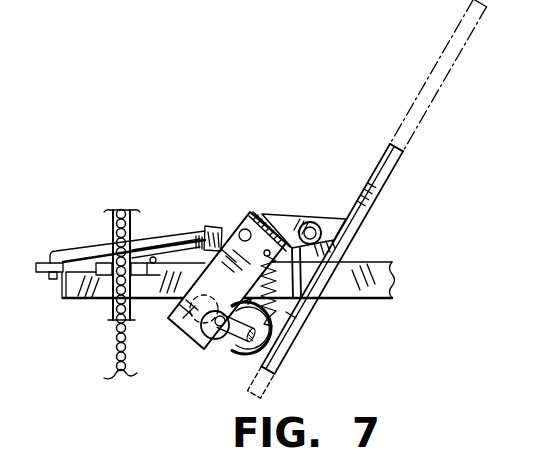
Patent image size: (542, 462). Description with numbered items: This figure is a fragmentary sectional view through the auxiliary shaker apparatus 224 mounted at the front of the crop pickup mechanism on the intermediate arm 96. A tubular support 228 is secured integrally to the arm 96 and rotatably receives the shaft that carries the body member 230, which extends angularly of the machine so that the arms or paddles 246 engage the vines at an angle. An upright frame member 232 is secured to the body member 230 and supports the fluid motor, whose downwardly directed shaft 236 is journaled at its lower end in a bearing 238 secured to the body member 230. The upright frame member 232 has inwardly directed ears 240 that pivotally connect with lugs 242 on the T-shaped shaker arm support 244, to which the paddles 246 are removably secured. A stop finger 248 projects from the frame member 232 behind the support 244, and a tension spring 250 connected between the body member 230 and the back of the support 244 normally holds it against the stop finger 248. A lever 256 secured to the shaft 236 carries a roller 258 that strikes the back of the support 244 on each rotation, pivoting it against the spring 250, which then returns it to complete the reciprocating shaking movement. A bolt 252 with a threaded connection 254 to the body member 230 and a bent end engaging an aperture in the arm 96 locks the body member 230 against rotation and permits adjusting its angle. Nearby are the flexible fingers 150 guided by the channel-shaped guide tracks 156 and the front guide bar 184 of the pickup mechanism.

The intermediate arm 96 is at (383, 298).
The flexible fingers 150 is at (122, 210).
The channel-shaped guide tracks 156 is at (110, 312).
The front guide bar 184 is at (152, 257).
The auxiliary shaker apparatus 224 is at (247, 180).
The tubular support 228 is at (203, 328).
The body member 230 is at (180, 323).
The upright frame member 232 is at (265, 226).
The downwardly directed shaft 236 is at (283, 360).
The bearing 238 is at (253, 352).
The inwardly directed ears 240 is at (298, 222).
The lugs 242 is at (330, 227).
The shaker arm support 244 is at (366, 208).
The arms or paddles 246 is at (420, 97).
The stop finger 248 is at (284, 303).
The tension spring 250 is at (292, 316).
The bolt 252 is at (91, 252).
The threaded connection 254 is at (223, 228).
The lever 256 is at (53, 278).
The roller 258 is at (223, 337).